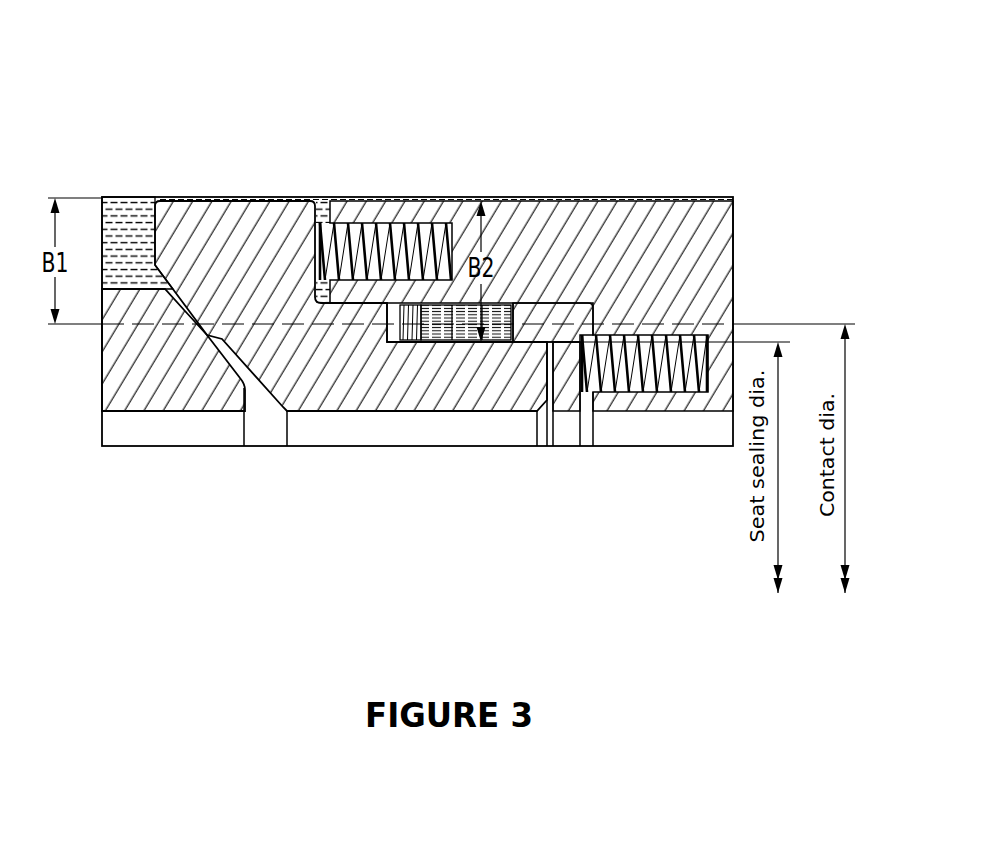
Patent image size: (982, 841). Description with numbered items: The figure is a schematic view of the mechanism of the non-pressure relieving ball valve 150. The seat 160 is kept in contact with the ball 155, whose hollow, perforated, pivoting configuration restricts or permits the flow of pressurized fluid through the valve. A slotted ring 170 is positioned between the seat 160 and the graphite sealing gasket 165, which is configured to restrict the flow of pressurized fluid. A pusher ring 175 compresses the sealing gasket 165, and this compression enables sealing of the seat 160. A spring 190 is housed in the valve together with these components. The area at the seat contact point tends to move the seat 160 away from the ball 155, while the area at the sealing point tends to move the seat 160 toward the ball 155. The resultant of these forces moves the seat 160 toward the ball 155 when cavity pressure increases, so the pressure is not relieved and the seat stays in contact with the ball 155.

The non-pressure relieving ball valve 150 is at (344, 62).
The ball 155 is at (164, 394).
The seat 160 is at (349, 394).
The sealing gasket 165 is at (515, 303).
The slotted ring 170 is at (424, 303).
The pusher ring 175 is at (566, 394).
The spring 190 is at (362, 245).